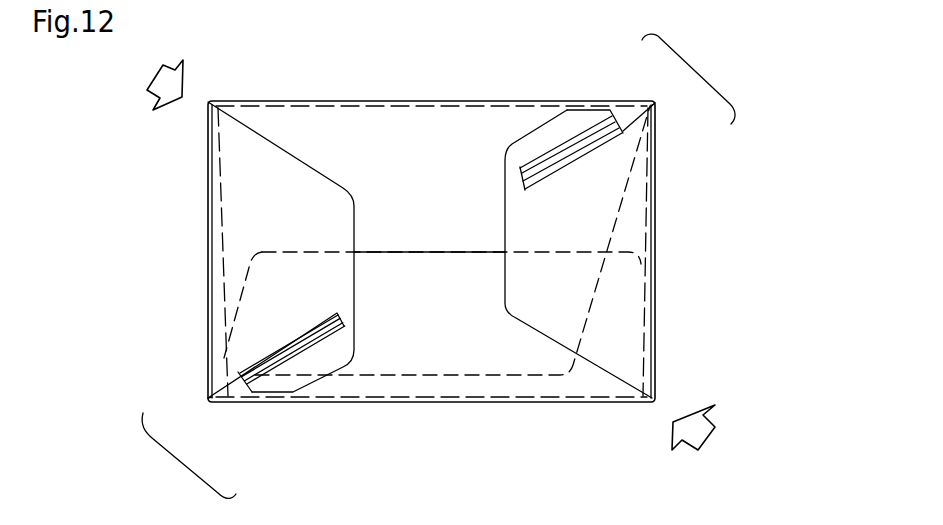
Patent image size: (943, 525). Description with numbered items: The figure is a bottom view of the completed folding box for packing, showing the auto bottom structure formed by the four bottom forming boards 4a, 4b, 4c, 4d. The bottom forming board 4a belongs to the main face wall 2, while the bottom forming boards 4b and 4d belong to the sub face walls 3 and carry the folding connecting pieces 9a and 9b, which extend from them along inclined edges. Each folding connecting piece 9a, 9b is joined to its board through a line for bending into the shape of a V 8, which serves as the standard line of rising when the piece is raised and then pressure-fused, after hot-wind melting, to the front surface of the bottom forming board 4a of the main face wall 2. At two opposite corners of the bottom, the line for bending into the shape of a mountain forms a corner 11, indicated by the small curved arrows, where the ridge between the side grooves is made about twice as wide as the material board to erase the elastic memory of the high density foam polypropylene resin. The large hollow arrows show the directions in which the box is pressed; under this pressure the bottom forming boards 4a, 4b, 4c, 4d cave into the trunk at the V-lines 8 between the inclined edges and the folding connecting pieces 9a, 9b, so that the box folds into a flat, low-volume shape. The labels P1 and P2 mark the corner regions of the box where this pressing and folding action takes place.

The main face wall 2 is at (582, 102).
The sub face wall 3 is at (655, 162).
The bottom forming board 4a is at (445, 193).
The bottom forming board 4b is at (575, 238).
The bottom forming board 4c is at (447, 323).
The bottom forming board 4d is at (297, 227).
The line for bending into the shape of a V 8 is at (578, 148).
The folding connecting piece 9a is at (557, 130).
The folding connecting piece 9b is at (322, 363).
The corner 11 is at (660, 89).
The pressing point P1 is at (731, 72).
The pressing point P2 is at (168, 493).